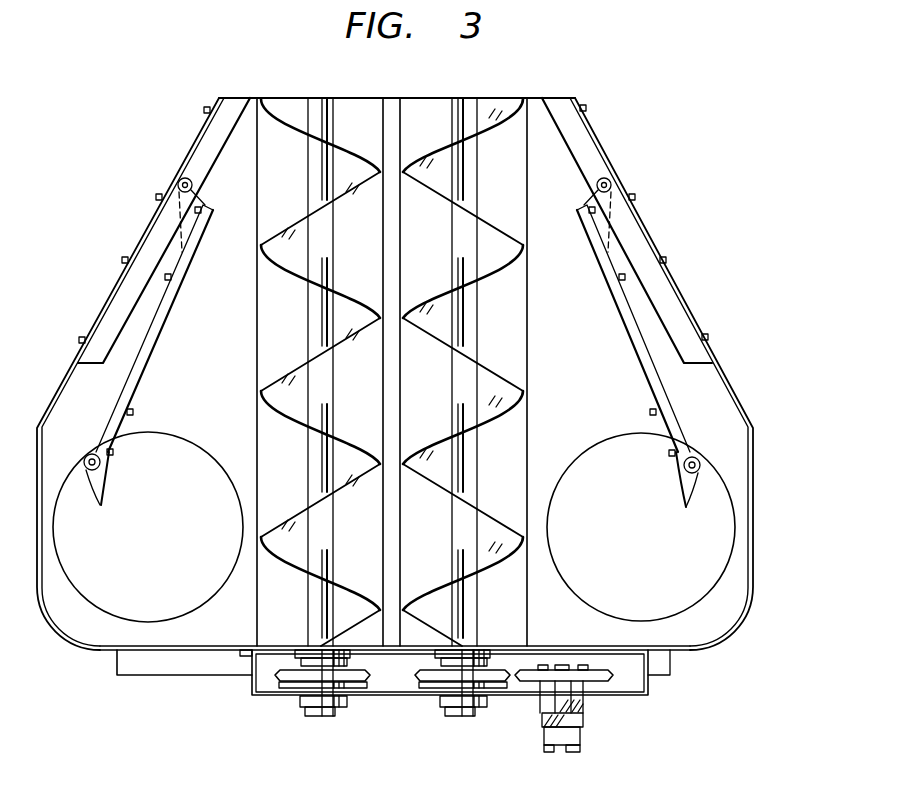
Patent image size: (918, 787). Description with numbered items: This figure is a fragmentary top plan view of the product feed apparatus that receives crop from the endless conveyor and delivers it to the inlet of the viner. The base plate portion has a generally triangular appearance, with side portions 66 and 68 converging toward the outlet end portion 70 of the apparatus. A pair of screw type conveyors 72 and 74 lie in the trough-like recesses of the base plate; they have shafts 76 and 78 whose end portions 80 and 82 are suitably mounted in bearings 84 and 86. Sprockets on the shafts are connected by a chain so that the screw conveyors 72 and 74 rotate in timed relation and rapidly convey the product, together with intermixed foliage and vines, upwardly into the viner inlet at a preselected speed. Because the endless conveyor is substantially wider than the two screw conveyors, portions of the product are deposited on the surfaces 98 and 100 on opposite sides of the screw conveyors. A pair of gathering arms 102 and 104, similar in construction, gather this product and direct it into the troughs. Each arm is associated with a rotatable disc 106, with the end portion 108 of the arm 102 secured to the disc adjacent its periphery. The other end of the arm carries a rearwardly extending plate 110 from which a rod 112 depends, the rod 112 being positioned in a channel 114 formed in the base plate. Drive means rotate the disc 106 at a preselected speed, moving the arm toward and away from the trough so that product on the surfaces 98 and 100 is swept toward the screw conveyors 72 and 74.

The side portion 66 is at (676, 280).
The side portion 68 is at (148, 226).
The outlet end portion 70 is at (441, 98).
The screw type conveyor 72 is at (478, 508).
The screw type conveyor 74 is at (298, 510).
The shaft 76 is at (468, 607).
The shaft 78 is at (312, 602).
The end portion 80 is at (487, 657).
The end portion 82 is at (348, 656).
The bearing 84 is at (440, 698).
The bearing 86 is at (297, 700).
The surface 98 is at (604, 398).
The surface 100 is at (222, 398).
The gathering arm 102 is at (680, 427).
The gathering arm 104 is at (126, 400).
The rotatable disc 106 is at (713, 530).
The end portion 108 is at (684, 470).
The rearwardly extending plate 110 is at (611, 236).
The rod 112 is at (606, 180).
The channel 114 is at (583, 137).